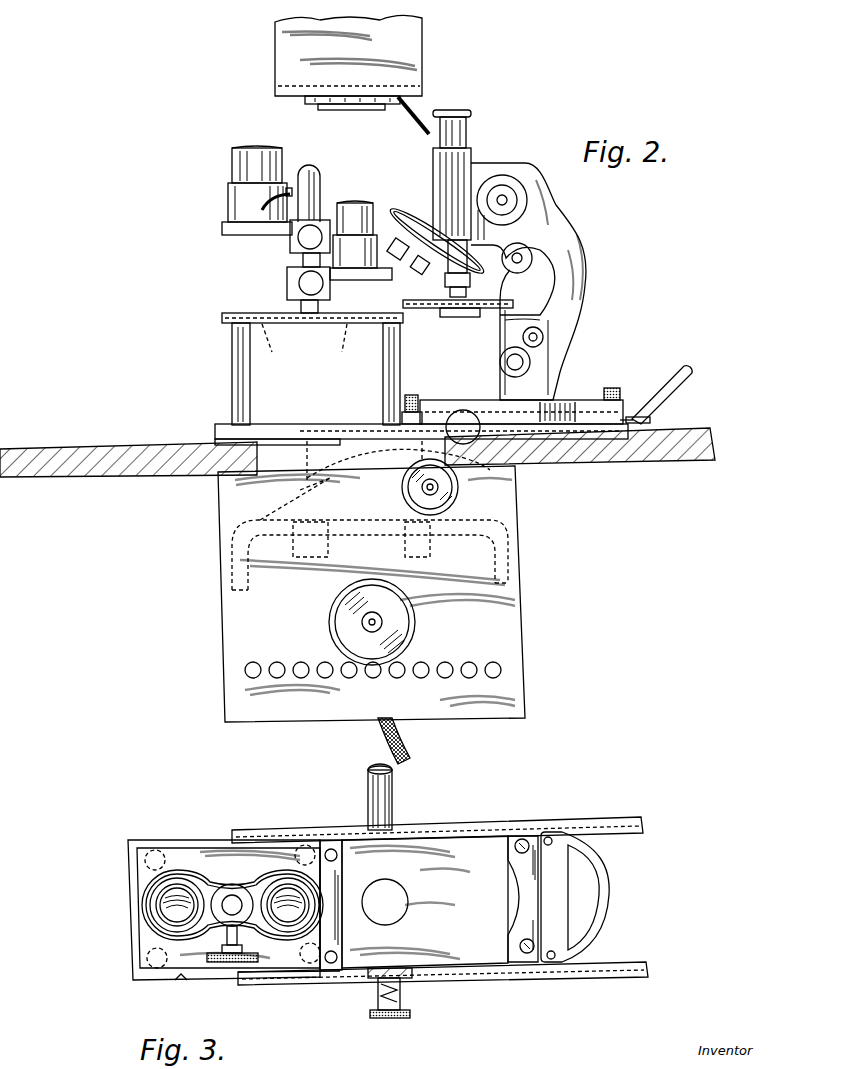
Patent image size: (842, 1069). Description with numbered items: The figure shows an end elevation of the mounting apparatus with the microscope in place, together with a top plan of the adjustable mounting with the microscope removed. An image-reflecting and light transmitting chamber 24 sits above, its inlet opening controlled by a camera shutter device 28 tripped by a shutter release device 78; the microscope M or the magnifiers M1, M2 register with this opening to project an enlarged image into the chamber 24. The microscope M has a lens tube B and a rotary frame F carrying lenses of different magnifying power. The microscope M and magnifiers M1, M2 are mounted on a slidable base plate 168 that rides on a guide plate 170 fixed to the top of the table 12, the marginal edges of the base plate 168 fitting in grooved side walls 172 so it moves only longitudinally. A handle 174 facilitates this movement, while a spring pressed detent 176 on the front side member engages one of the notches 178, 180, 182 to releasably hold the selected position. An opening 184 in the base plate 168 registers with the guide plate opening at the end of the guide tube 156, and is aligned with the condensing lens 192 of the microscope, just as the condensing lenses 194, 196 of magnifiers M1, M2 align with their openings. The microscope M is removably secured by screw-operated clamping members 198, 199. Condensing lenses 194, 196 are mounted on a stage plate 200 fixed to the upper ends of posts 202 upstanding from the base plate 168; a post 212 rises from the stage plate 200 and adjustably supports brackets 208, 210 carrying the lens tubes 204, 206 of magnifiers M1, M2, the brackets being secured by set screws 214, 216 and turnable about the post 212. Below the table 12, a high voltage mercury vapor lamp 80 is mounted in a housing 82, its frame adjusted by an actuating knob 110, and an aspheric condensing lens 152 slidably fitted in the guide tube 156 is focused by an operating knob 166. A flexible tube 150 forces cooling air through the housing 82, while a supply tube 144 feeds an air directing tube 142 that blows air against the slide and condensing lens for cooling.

In FIG. 2, the table 12 is at (680, 465).
In FIG. 2, the image-reflecting and light transmitting chamber 24 is at (437, 62).
In FIG. 2, the camera shutter device 28 is at (357, 112).
In FIG. 2, the shutter release device 78 is at (410, 103).
In FIG. 2, the lens tube B is at (468, 138).
In FIG. 2, the microscope M is at (577, 231).
In FIG. 2, the rotary frame F is at (425, 232).
In FIG. 2, the condensing lens 192 is at (455, 318).
In FIG. 2, the magnifier M2 is at (232, 170).
In FIG. 3, the magnifier M2 is at (182, 870).
In FIG. 2, the magnifier M1 is at (368, 198).
In FIG. 3, the magnifier M1 is at (283, 866).
In FIG. 2, the lens tube 206 is at (250, 205).
In FIG. 3, the lens tube 206 is at (150, 925).
In FIG. 2, the stage plate 200 is at (315, 324).
In FIG. 3, the stage plate 200 is at (207, 860).
In FIG. 2, the post 212 is at (319, 180).
In FIG. 3, the post 212 is at (233, 895).
In FIG. 2, the set screw 216 is at (298, 242).
In FIG. 2, the bracket 210 is at (302, 240).
In FIG. 2, the bracket 208 is at (299, 270).
In FIG. 2, the set screw 214 is at (303, 290).
In FIG. 2, the lens tube 204 is at (358, 252).
In FIG. 3, the lens tube 204 is at (270, 880).
In FIG. 2, the posts 202 is at (230, 352).
In FIG. 3, the posts 202 is at (152, 855).
In FIG. 2, the condensing lens 196 is at (272, 347).
In FIG. 2, the condensing lens 194 is at (340, 347).
In FIG. 2, the grooved side walls 172 is at (277, 433).
In FIG. 3, the grooved side walls 172 is at (578, 820).
In FIG. 2, the guide plate 170 is at (538, 425).
In FIG. 3, the guide plate 170 is at (617, 838).
In FIG. 2, the spring pressed detent 176 is at (460, 410).
In FIG. 3, the spring pressed detent 176 is at (412, 1004).
In FIG. 2, the screw-operated clamping member 199 is at (413, 395).
In FIG. 2, the screw-operated clamping member 198 is at (618, 396).
In FIG. 2, the handle 174 is at (690, 366).
In FIG. 3, the handle 174 is at (607, 882).
In FIG. 2, the base plate 168 is at (633, 428).
In FIG. 3, the base plate 168 is at (490, 838).
In FIG. 2, the operating knob 166 is at (460, 492).
In FIG. 2, the housing 82 is at (528, 590).
In FIG. 2, the mercury vapor lamp 80 is at (365, 518).
In FIG. 2, the actuating knob 110 is at (330, 620).
In FIG. 2, the guide tube 156 is at (300, 478).
In FIG. 2, the condensing lens 152 is at (300, 490).
In FIG. 2, the flexible tube 150 is at (404, 738).
In FIG. 3, the tube 142 is at (393, 815).
In FIG. 3, the supply tube 144 is at (368, 772).
In FIG. 3, the notch 182 is at (181, 984).
In FIG. 3, the notch 180 is at (290, 977).
In FIG. 3, the opening 184 is at (398, 892).
In FIG. 3, the notch 178 is at (392, 970).